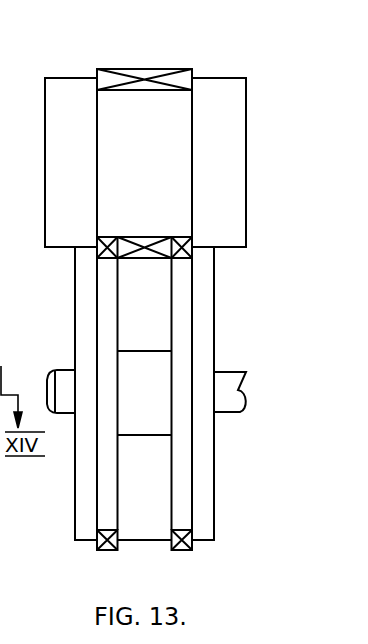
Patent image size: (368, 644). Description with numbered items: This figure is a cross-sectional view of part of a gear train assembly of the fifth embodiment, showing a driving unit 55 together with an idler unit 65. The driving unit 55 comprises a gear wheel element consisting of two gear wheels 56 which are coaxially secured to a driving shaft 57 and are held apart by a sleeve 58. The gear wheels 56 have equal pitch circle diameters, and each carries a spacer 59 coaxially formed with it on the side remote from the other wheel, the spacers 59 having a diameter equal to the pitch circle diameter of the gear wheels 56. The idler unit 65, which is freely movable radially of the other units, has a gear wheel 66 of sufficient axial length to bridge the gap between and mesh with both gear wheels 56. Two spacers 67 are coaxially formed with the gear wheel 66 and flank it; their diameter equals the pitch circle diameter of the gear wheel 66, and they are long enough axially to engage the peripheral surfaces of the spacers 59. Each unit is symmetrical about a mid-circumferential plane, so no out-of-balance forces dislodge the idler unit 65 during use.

The driving unit 55 is at (75, 294).
The gear wheels 56 is at (177, 553).
The driving shaft 57 is at (224, 393).
The sleeve 58 is at (149, 393).
The spacer 59 is at (87, 493).
The idler unit 65 is at (82, 78).
The gear wheel 66 is at (143, 140).
The spacers 67 is at (74, 200).